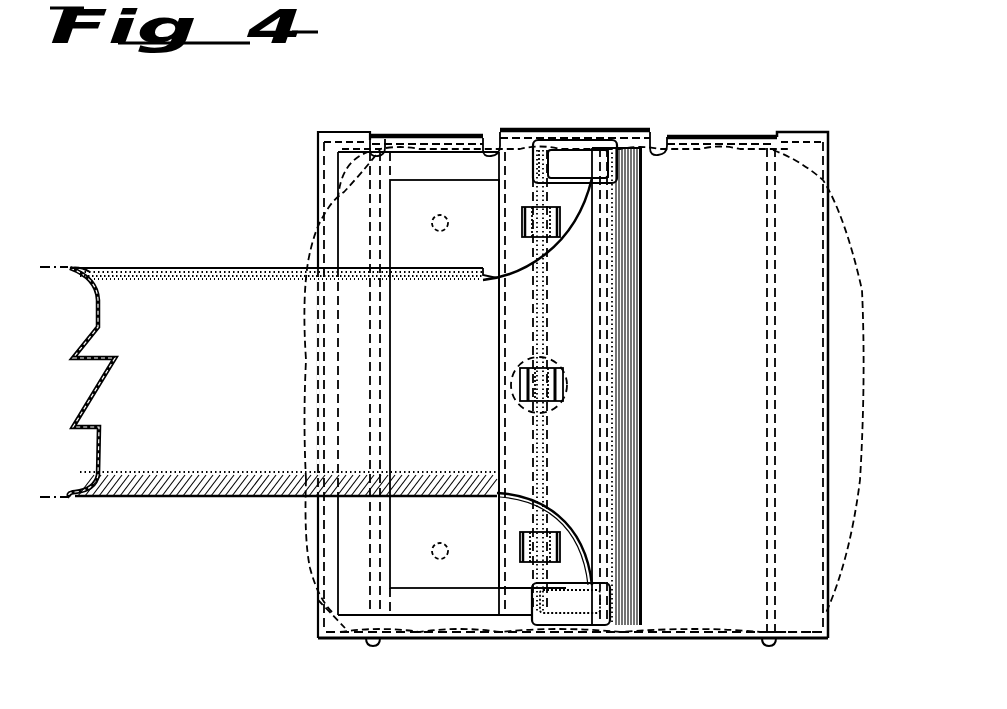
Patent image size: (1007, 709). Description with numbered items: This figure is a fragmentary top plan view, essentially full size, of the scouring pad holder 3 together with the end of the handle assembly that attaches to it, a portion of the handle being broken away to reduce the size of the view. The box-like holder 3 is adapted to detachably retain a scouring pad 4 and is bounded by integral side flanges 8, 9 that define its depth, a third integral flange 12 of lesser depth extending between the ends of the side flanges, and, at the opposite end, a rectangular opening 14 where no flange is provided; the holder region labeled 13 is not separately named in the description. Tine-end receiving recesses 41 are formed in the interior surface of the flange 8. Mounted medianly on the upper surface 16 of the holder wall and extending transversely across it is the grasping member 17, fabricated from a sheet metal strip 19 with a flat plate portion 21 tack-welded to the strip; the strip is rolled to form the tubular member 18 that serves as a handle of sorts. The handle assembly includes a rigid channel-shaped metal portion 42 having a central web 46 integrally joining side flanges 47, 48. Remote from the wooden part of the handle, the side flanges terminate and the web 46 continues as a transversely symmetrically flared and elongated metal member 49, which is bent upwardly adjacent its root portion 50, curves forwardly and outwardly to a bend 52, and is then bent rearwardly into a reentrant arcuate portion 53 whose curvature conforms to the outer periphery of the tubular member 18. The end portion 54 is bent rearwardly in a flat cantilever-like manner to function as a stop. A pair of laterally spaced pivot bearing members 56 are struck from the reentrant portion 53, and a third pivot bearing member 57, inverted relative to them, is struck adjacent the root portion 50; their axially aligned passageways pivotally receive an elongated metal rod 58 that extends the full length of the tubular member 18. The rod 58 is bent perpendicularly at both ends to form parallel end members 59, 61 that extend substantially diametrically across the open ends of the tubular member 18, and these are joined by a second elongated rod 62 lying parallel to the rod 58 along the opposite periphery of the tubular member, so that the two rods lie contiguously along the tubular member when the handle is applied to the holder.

The scouring pad holder 3 is at (703, 165).
The scouring pad 4 is at (300, 560).
The side flange 8 is at (758, 641).
The side flange 9 is at (653, 127).
The third integral flange 12 is at (823, 394).
The left end frame member 13 is at (318, 177).
The rectangular opening 14 is at (318, 208).
The upper surface 16 is at (317, 592).
The grasping member 17 is at (642, 501).
The tubular member 18 is at (625, 380).
The sheet metal strip 19 is at (418, 168).
The flat plate portion 21 is at (363, 545).
The tine-end receiving recesses 41 is at (374, 646).
The channel-shaped metal portion 42 is at (160, 499).
The central web 46 is at (228, 402).
The side flange 47 is at (250, 498).
The side flange 48 is at (212, 266).
The flared elongated metal member 49 is at (553, 292).
The root portion 50 is at (520, 320).
The end portion 54 is at (487, 586).
The pivot bearing members 56 is at (523, 223).
The third pivot bearing member 57 is at (558, 385).
The elongated metal rod 58 is at (546, 250).
The end member 59 is at (575, 162).
The end member 61 is at (573, 626).
The second elongated rod 62 is at (620, 306).
The bend 52 is at (610, 181).
The reentrant arcuate portion 53 is at (567, 580).